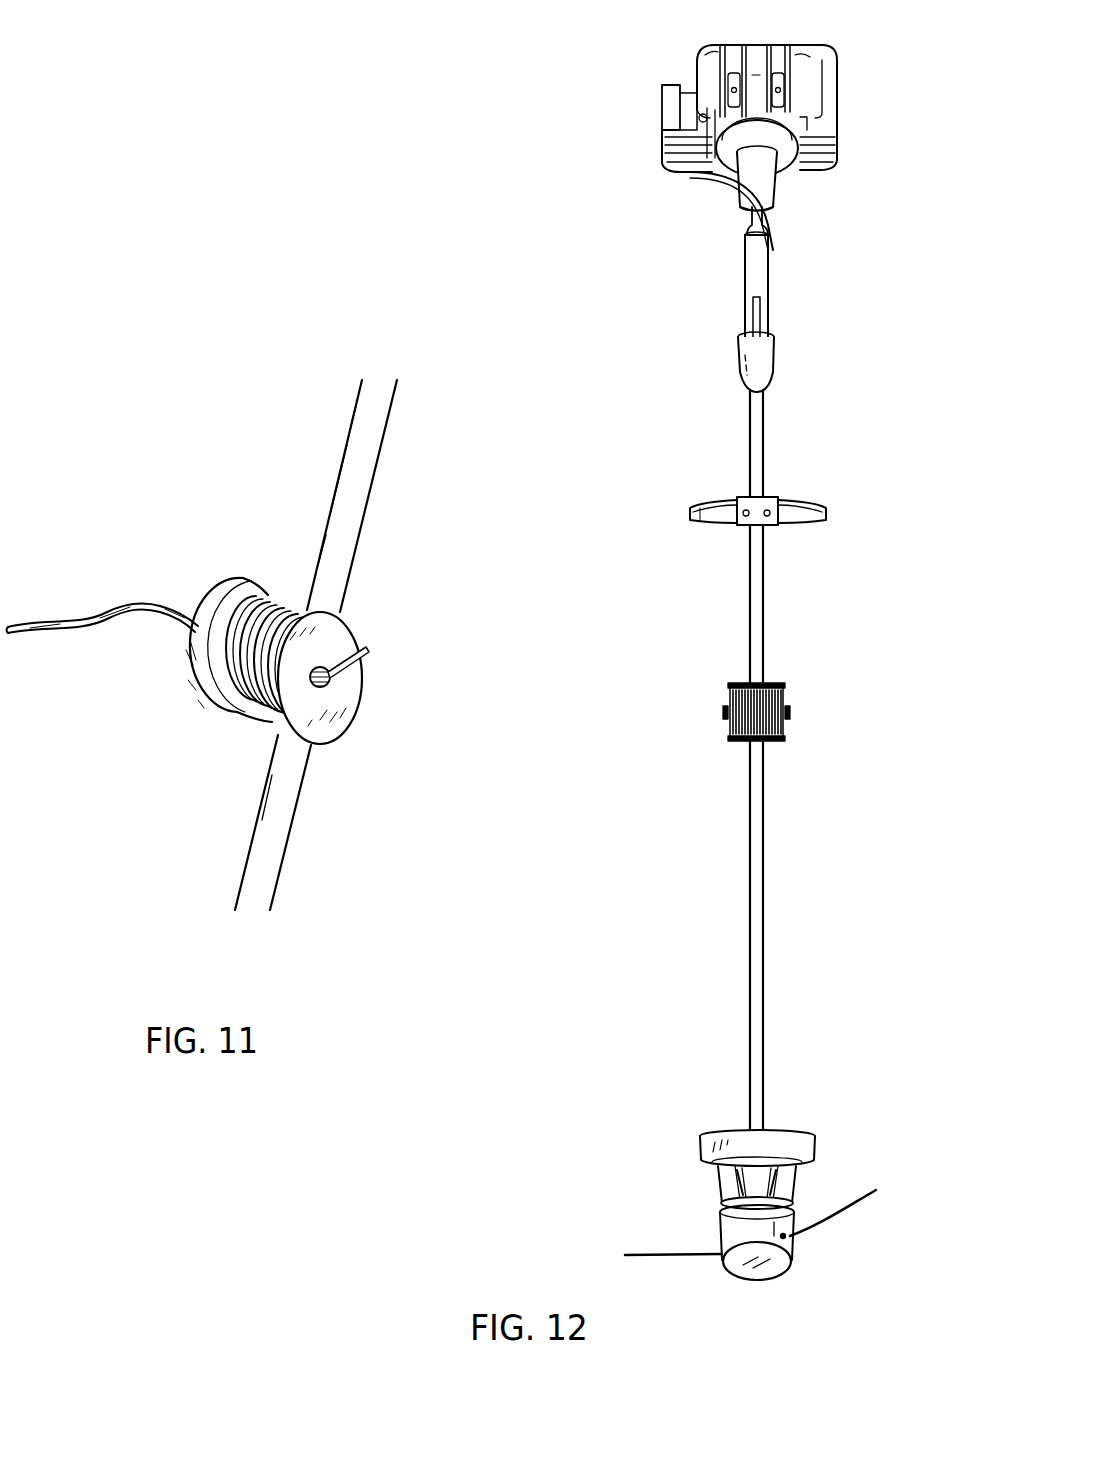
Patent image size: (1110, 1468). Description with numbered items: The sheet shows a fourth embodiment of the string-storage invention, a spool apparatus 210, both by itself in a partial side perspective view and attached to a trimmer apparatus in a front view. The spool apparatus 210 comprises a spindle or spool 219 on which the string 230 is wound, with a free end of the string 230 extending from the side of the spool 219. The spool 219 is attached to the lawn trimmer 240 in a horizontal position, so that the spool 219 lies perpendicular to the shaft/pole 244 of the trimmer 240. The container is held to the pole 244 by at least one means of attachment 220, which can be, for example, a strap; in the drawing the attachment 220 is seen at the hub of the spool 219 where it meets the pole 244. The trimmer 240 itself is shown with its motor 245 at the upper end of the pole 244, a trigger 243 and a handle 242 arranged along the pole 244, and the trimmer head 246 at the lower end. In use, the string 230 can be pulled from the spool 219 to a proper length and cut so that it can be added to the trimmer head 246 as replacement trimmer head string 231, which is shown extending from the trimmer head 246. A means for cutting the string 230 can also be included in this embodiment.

In FIG. 11, the spool apparatus 210 is at (260, 597).
In FIG. 12, the spool apparatus 210 is at (807, 661).
In FIG. 11, the spindle or spool 219 is at (343, 690).
In FIG. 12, the spindle or spool 219 is at (788, 700).
In FIG. 11, the attachment 220 is at (363, 660).
In FIG. 11, the string 230 is at (208, 670).
In FIG. 12, the trimmer head string 231 is at (657, 1253).
In FIG. 12, the lawn trimmer 240 is at (734, 694).
In FIG. 12, the handle 242 is at (827, 512).
In FIG. 12, the trigger 243 is at (773, 357).
In FIG. 11, the shaft/pole 244 is at (382, 450).
In FIG. 12, the shaft/pole 244 is at (747, 888).
In FIG. 12, the motor 245 is at (840, 117).
In FIG. 12, the trimmer head 246 is at (792, 1250).